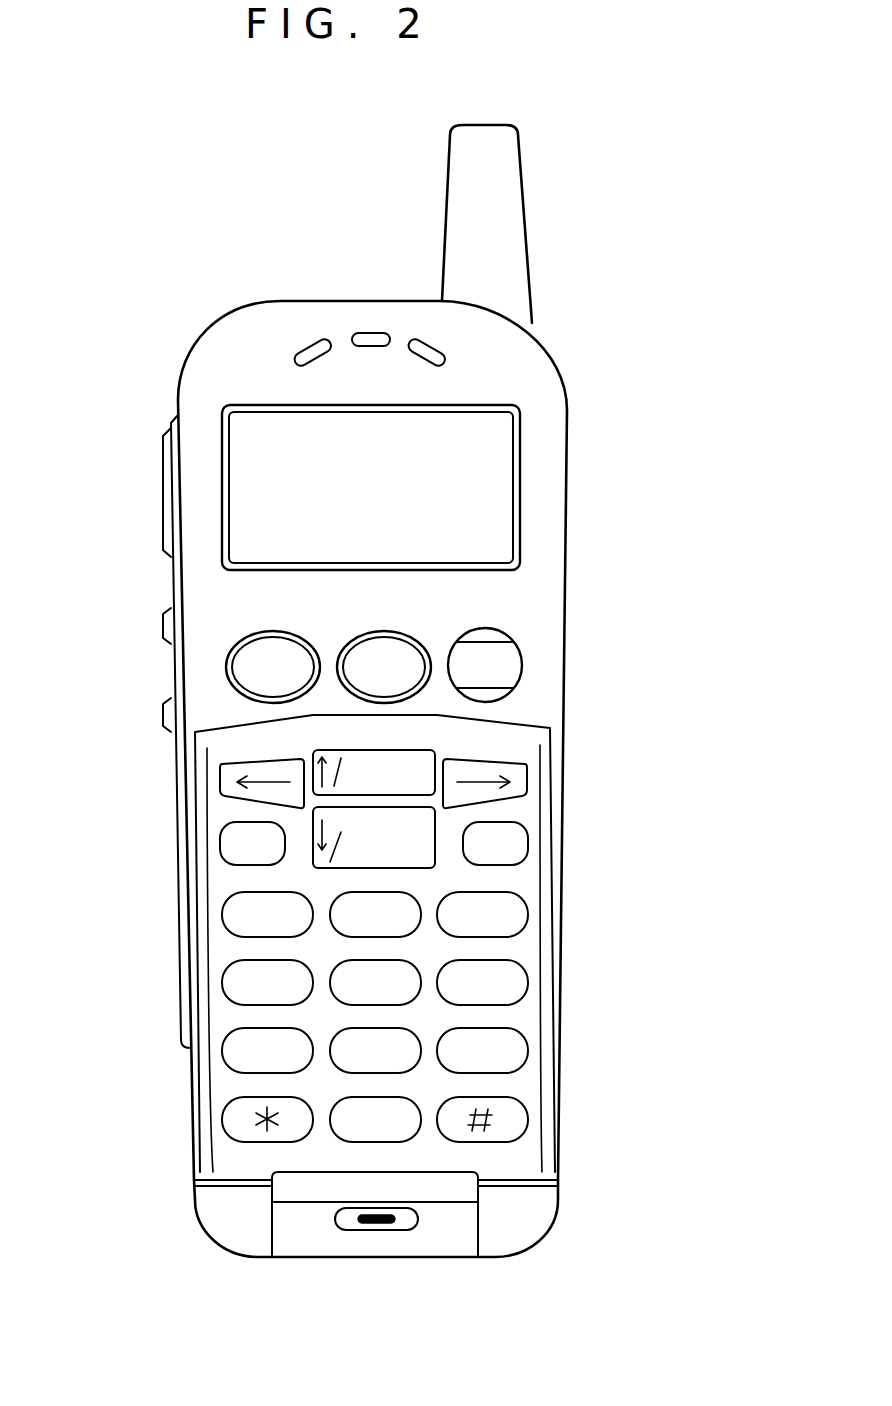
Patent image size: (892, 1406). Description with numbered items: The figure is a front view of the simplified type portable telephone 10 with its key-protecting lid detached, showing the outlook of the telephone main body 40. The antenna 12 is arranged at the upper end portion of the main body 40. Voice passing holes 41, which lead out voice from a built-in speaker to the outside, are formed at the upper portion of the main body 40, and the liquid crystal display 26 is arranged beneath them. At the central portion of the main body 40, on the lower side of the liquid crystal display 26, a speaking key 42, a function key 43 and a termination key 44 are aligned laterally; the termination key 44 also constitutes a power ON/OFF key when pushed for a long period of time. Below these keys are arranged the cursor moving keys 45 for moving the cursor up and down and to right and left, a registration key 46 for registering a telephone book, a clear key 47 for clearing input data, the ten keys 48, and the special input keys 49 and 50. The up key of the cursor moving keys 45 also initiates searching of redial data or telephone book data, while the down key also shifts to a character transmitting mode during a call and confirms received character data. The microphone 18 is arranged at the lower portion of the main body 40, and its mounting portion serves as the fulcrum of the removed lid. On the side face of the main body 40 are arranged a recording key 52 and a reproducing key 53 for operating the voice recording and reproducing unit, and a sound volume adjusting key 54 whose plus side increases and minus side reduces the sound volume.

The telephone 10 is at (204, 1269).
The antenna 12 is at (495, 190).
The microphone 18 is at (403, 1222).
The liquid crystal display 26 is at (460, 515).
The telephone main body 40 is at (540, 418).
The voice passing holes 41 is at (427, 338).
The speaking key 42 is at (265, 650).
The function key 43 is at (375, 652).
The termination key 44 is at (478, 642).
The cursor moving keys 45 is at (446, 734).
The registration key 46 is at (220, 843).
The clear key 47 is at (527, 843).
The ten keys 48 is at (537, 1020).
The special input key 49 is at (225, 1126).
The special input key 50 is at (515, 1125).
The recording key 52 is at (163, 622).
The reproducing key 53 is at (163, 712).
The sound volume adjusting key 54 is at (163, 470).